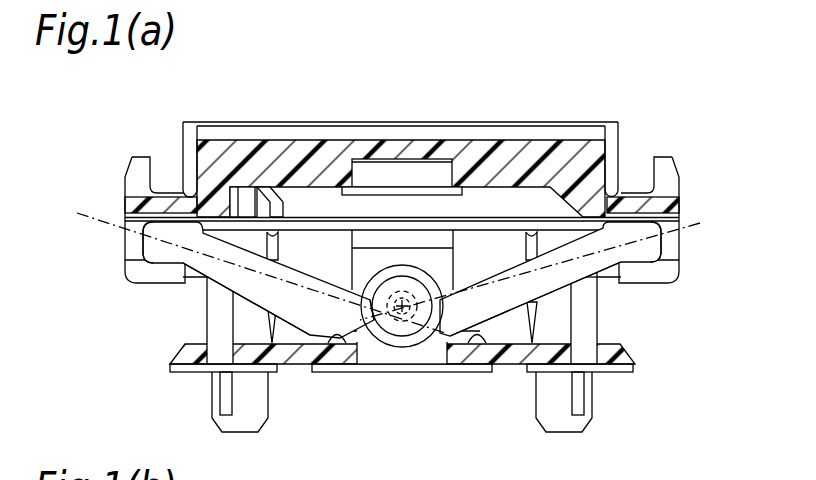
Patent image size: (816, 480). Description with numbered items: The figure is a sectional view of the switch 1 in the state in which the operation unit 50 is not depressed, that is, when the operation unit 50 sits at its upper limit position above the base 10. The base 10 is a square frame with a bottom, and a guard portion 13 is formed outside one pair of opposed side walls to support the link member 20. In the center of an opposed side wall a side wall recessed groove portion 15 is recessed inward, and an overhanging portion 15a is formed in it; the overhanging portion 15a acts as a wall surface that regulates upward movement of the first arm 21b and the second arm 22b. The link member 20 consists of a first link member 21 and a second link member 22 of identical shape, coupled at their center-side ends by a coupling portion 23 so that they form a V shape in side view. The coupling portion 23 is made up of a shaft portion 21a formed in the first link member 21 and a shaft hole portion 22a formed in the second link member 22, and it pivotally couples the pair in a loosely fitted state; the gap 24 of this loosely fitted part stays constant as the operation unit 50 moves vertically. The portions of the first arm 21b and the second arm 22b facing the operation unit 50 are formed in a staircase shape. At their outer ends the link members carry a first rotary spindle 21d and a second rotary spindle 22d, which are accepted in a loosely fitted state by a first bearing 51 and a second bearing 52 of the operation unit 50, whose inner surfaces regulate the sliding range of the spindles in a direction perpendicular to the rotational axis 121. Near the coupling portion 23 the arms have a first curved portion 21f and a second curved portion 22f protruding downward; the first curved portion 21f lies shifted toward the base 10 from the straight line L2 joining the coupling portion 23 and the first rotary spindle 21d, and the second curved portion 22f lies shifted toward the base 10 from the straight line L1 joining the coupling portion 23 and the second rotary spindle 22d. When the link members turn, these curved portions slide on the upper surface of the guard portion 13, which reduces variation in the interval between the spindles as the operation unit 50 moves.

The switch 1 is at (690, 98).
The base 10 is at (638, 363).
The guard portion 13 is at (446, 340).
The side wall recessed groove portion 15 is at (360, 250).
The overhanging portion 15a is at (402, 300).
The link member 20 is at (473, 283).
The first link member 21 is at (612, 271).
The shaft portion 21a is at (410, 325).
The first arm 21b is at (573, 267).
The first rotary spindle 21d is at (660, 240).
The first curved portion 21f is at (476, 333).
The second link member 22 is at (195, 269).
The shaft hole portion 22a is at (400, 296).
The second arm 22b is at (227, 277).
The second rotary spindle 22d is at (150, 239).
The second curved portion 22f is at (333, 337).
The coupling portion 23 is at (390, 348).
The gap 24 is at (396, 325).
The operation unit 50 is at (578, 127).
The first bearing 51 is at (633, 191).
The second bearing 52 is at (172, 203).
The rotational axis 121 is at (406, 322).
The straight line L1 is at (82, 213).
The straight line L2 is at (702, 222).